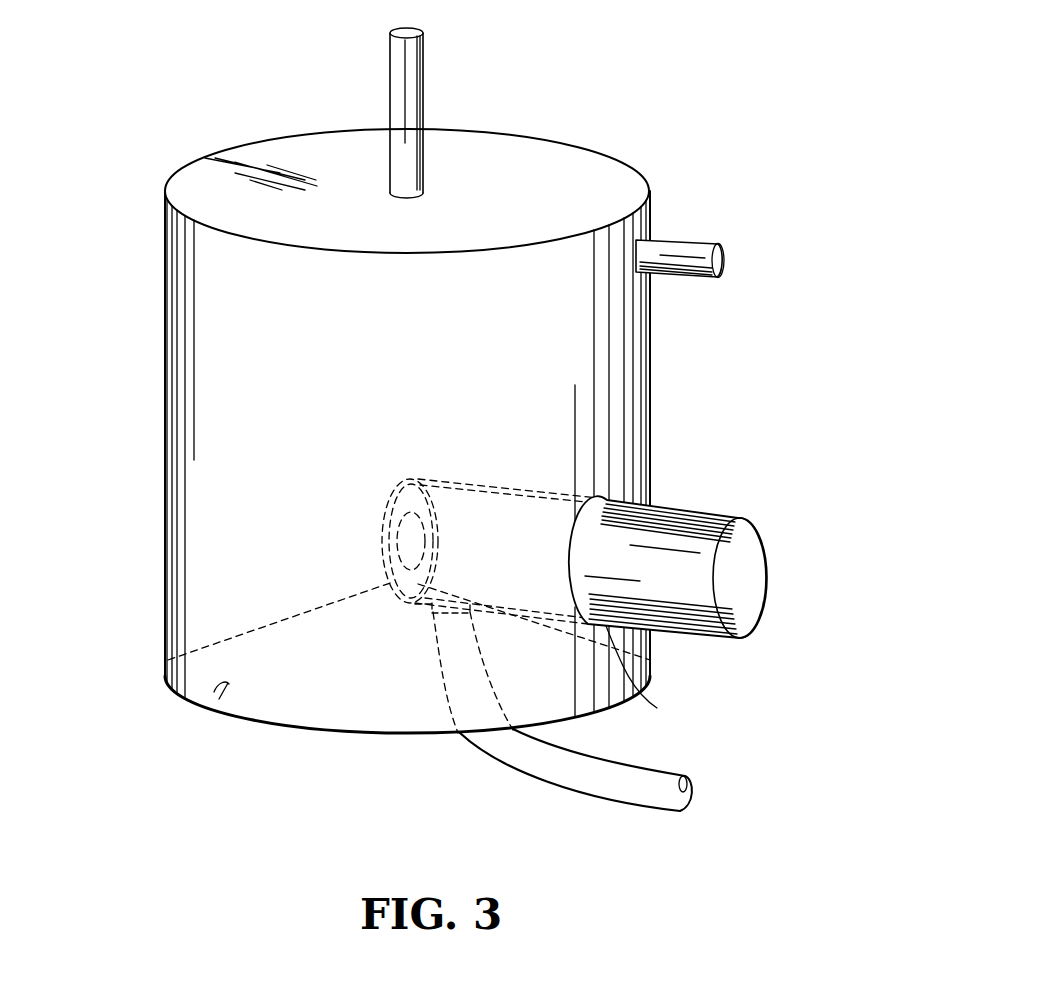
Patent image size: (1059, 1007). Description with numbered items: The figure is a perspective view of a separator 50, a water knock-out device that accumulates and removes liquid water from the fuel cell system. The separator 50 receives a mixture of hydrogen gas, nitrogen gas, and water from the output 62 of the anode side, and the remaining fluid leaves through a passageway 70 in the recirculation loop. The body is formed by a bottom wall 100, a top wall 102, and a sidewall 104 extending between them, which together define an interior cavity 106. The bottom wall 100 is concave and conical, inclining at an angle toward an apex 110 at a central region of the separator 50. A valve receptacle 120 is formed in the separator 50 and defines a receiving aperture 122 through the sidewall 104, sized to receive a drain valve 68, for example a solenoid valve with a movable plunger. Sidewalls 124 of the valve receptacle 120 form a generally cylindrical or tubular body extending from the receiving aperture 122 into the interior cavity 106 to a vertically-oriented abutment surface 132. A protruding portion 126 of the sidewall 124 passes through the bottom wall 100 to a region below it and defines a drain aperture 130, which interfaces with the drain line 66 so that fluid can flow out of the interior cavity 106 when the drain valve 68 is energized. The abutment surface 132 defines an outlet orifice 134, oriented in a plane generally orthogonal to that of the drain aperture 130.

The separator 50 is at (405, 396).
The output of the anode side 62 is at (683, 240).
The drain line 66 is at (590, 795).
The drain valve 68 is at (690, 511).
The passageway 70 is at (390, 92).
The bottom wall 100 is at (206, 705).
The top wall 102 is at (550, 138).
The sidewall 104 is at (165, 432).
The interior cavity 106 is at (430, 343).
The apex 110 is at (385, 566).
The valve receptacle 120 is at (517, 587).
The receiving aperture 122 is at (563, 656).
The sidewalls of the valve receptacle 124 is at (537, 490).
The protruding portion 126 is at (412, 608).
The drain aperture 130 is at (455, 601).
The abutment surface 132 is at (410, 482).
The outlet orifice 134 is at (405, 518).